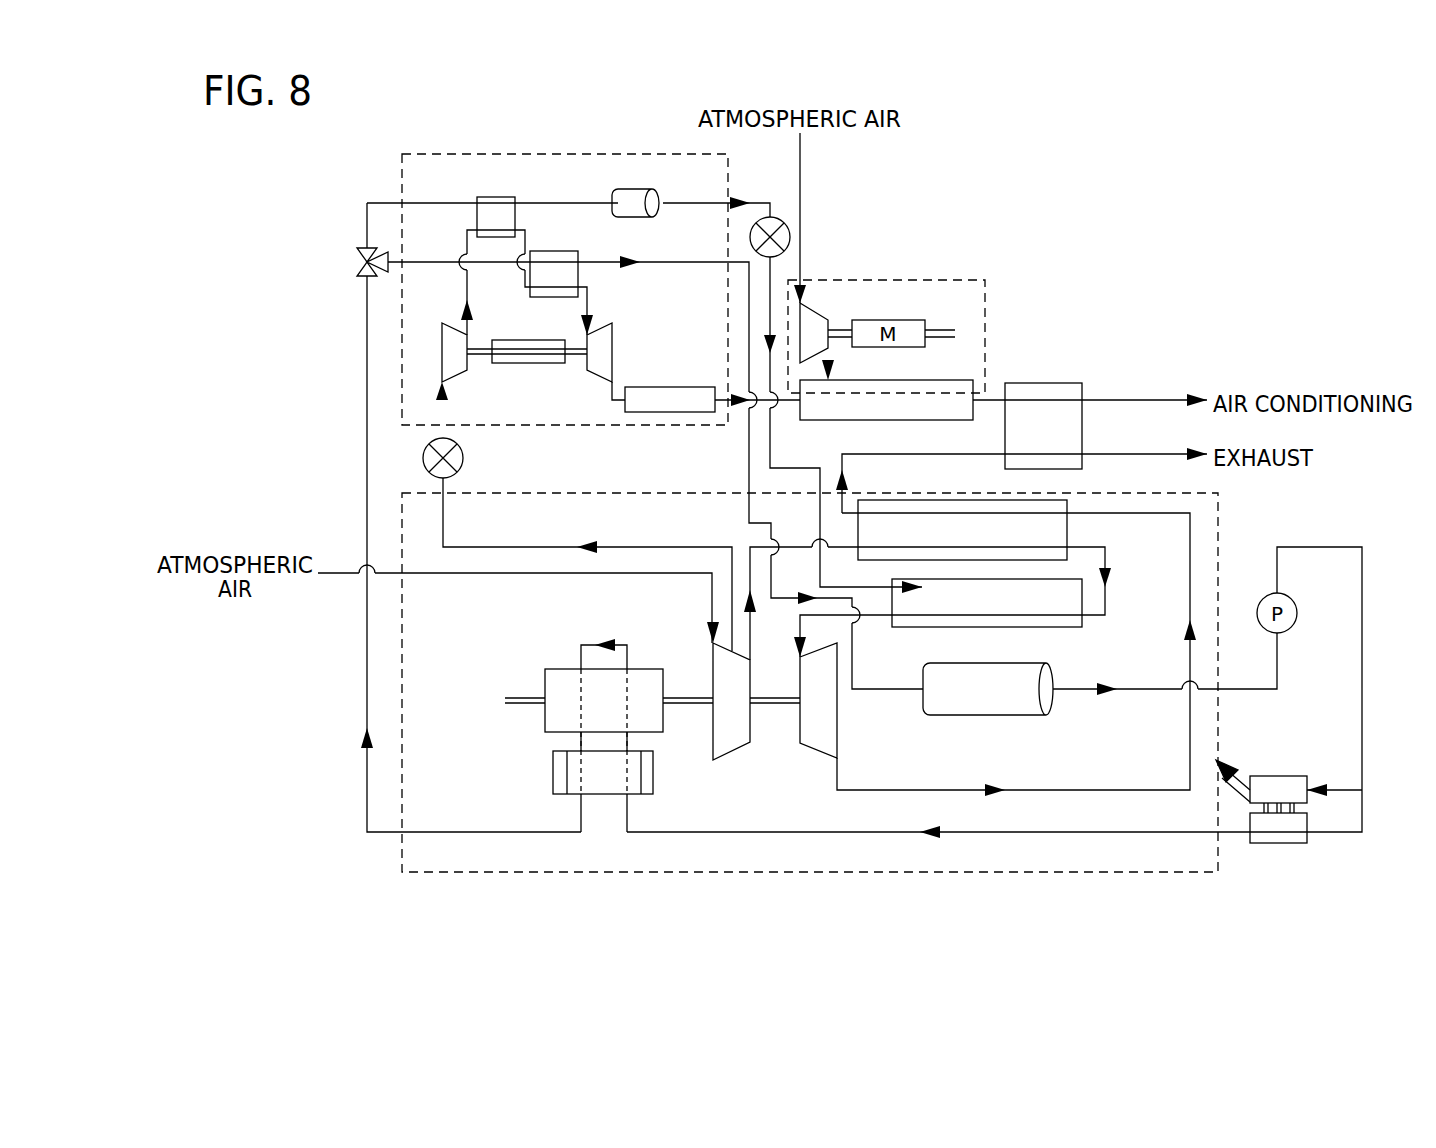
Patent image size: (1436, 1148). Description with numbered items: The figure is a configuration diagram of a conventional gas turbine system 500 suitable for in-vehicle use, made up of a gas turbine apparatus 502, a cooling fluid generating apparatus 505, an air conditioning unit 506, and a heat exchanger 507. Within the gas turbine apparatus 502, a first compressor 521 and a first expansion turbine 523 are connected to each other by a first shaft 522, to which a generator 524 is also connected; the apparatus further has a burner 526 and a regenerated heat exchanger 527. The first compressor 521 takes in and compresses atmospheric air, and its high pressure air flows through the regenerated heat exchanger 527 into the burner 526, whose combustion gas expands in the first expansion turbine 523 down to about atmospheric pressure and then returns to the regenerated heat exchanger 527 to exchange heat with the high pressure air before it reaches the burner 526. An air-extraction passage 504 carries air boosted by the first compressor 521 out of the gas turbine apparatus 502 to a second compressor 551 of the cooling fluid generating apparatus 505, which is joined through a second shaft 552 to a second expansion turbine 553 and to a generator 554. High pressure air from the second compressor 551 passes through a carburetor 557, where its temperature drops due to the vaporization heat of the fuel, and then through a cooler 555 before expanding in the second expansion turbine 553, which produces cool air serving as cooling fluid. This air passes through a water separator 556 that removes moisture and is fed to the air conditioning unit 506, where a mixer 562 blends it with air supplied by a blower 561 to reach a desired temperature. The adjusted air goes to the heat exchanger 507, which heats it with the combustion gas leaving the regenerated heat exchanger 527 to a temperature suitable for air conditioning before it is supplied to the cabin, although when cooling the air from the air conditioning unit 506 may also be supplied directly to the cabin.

The gas turbine system 500 is at (1207, 228).
The gas turbine apparatus 502 is at (930, 875).
The air-extraction passage 504 is at (647, 546).
The cooling fluid generating apparatus 505 is at (578, 153).
The air conditioning unit 506 is at (947, 280).
The heat exchanger 507 is at (1045, 382).
The first compressor 521 is at (730, 752).
The first shaft 522 is at (775, 706).
The first expansion turbine 523 is at (812, 750).
The generator 524 is at (557, 668).
The burner 526 is at (1052, 628).
The regenerated heat exchanger 527 is at (1067, 528).
The second compressor 551 is at (458, 370).
The second shaft 552 is at (578, 358).
The second expansion turbine 553 is at (613, 350).
The generator 554 is at (523, 364).
The cooler 555 is at (578, 272).
The water separator 556 is at (678, 387).
The carburetor 557 is at (493, 197).
The blower 561 is at (815, 308).
The mixer 562 is at (947, 378).